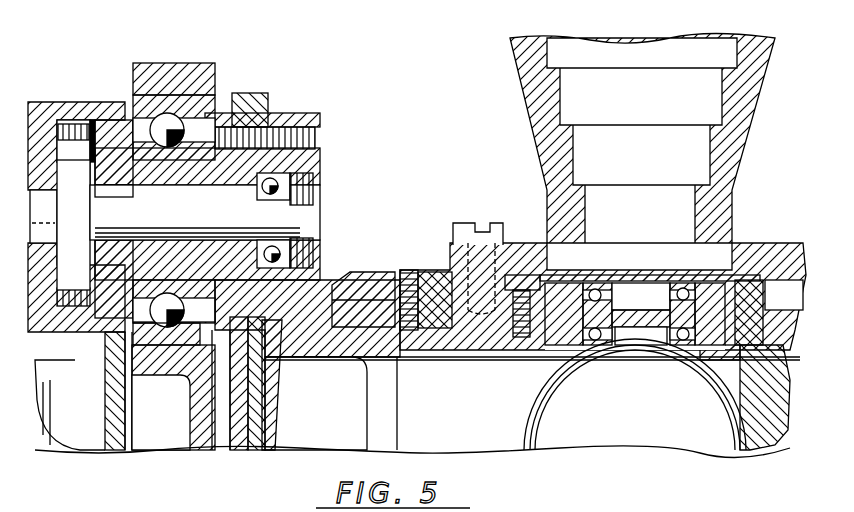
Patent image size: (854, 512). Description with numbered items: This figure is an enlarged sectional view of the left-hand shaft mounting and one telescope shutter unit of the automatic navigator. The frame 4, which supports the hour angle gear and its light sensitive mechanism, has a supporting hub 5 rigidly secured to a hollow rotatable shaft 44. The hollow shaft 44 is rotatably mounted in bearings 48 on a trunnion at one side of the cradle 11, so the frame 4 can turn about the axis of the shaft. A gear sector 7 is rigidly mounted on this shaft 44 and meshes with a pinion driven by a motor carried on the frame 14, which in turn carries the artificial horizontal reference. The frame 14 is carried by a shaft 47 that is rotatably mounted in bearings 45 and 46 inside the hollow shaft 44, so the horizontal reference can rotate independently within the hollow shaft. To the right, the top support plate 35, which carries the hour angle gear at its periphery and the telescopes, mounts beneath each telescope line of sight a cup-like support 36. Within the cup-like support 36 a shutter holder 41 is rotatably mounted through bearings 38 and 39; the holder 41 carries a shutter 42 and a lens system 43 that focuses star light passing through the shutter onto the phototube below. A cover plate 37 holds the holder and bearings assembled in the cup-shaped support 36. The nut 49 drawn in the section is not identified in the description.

The frame 4 is at (370, 400).
The supporting hubs 5 is at (310, 122).
The gear sector 7 is at (245, 128).
The cradle 11 is at (200, 410).
The frame 14 is at (50, 257).
The top support plate 35 is at (473, 342).
The cup-like support 36 is at (558, 345).
The cover plate 37 is at (733, 245).
The bearing 38 is at (598, 290).
The bearing 39 is at (583, 348).
The shutter holder 41 is at (677, 348).
The shutter 42 is at (630, 308).
The lens system 43 is at (630, 348).
The hollow rotatable shaft 44 is at (247, 158).
The bearing 45 is at (292, 176).
The bearing 46 is at (115, 198).
The shaft 47 is at (218, 227).
The bearings 48 is at (170, 118).
The nut 49 is at (72, 165).